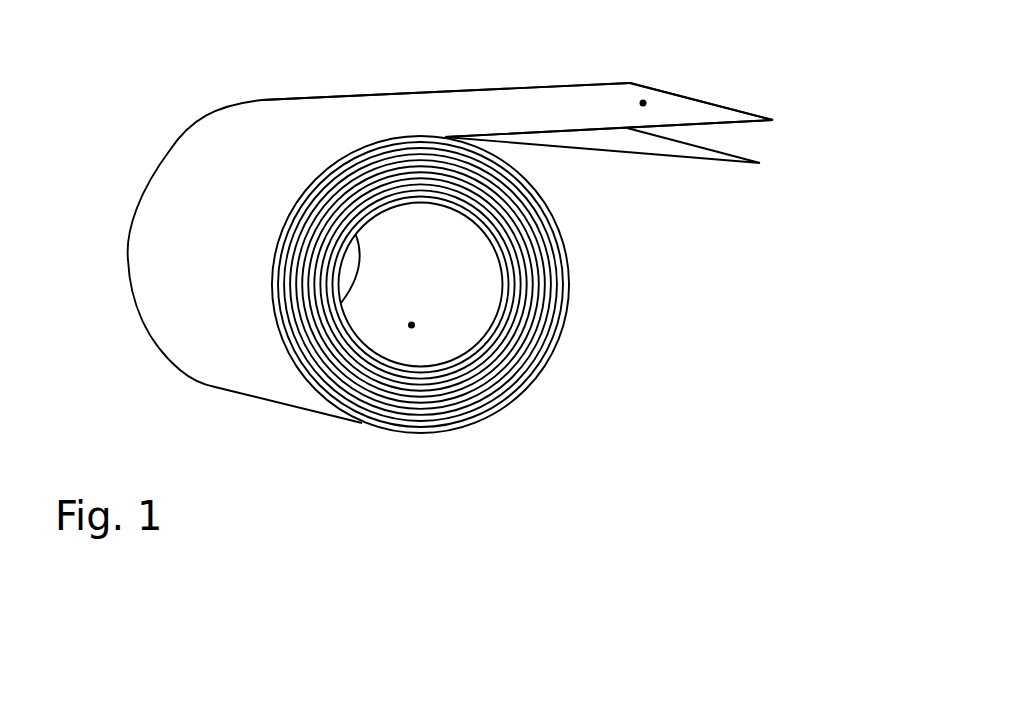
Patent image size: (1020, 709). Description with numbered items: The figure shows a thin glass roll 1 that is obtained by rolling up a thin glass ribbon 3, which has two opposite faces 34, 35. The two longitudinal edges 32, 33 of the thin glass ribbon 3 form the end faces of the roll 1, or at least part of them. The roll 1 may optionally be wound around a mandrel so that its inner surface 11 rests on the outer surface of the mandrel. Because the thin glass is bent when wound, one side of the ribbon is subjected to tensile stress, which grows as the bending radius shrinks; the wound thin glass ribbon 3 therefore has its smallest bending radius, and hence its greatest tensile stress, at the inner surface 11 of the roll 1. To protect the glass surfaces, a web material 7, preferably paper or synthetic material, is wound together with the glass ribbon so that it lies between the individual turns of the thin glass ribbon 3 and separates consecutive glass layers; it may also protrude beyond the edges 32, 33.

The thin glass roll 1 is at (144, 144).
The thin glass ribbon 3 is at (513, 101).
The web material 7 is at (615, 152).
The inner surface 11 is at (483, 234).
The edge 32 is at (730, 124).
The edge 33 is at (427, 93).
The face 34 is at (643, 103).
The face 35 is at (411, 325).